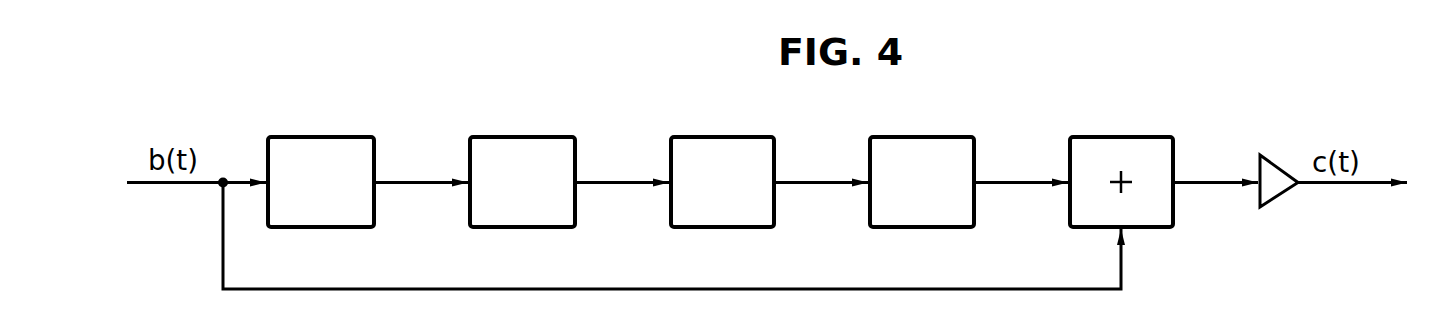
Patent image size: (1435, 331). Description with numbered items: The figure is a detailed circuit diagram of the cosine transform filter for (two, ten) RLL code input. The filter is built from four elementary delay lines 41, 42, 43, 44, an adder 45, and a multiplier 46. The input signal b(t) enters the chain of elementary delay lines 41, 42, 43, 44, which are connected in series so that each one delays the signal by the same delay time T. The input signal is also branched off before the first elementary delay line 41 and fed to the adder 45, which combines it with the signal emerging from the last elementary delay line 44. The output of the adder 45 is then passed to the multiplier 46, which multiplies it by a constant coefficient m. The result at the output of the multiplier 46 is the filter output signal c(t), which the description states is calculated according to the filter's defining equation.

The elementary delay line 41 is at (302, 133).
The elementary delay line 42 is at (507, 133).
The elementary delay line 43 is at (707, 133).
The elementary delay line 44 is at (903, 133).
The adder 45 is at (1107, 133).
The multiplier 46 is at (1278, 157).